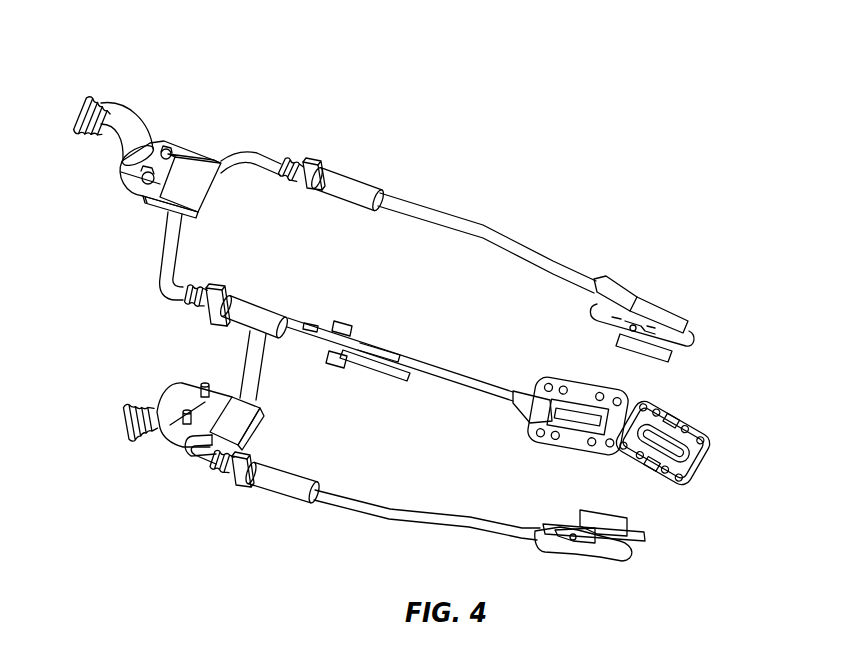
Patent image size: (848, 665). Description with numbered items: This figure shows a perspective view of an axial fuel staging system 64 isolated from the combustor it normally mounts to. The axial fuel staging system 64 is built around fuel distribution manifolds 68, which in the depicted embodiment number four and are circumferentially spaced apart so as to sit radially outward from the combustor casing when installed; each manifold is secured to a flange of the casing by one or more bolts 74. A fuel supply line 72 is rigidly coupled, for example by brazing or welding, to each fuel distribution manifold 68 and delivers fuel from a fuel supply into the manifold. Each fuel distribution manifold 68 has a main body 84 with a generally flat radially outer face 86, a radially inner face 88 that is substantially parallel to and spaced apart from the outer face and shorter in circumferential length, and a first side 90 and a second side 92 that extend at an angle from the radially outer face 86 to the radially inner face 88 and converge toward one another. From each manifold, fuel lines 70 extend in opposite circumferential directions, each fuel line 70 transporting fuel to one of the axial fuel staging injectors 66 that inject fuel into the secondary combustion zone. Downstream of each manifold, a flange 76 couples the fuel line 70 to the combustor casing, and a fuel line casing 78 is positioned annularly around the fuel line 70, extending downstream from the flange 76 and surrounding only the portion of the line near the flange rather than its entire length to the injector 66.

The axial fuel staging system 64 is at (410, 58).
The axial fuel staging injector 66 is at (674, 298).
The fuel distribution manifold 68 is at (181, 118).
The fuel line 70 is at (487, 232).
The fuel supply line 72 is at (127, 123).
The bolt 74 is at (141, 177).
The flange 76 is at (312, 163).
The fuel line casing 78 is at (358, 182).
The main body 84 is at (190, 172).
The radially outer face 86 is at (176, 201).
The radially inner face 88 is at (236, 415).
The first side 90 is at (236, 440).
The second side 92 is at (262, 398).